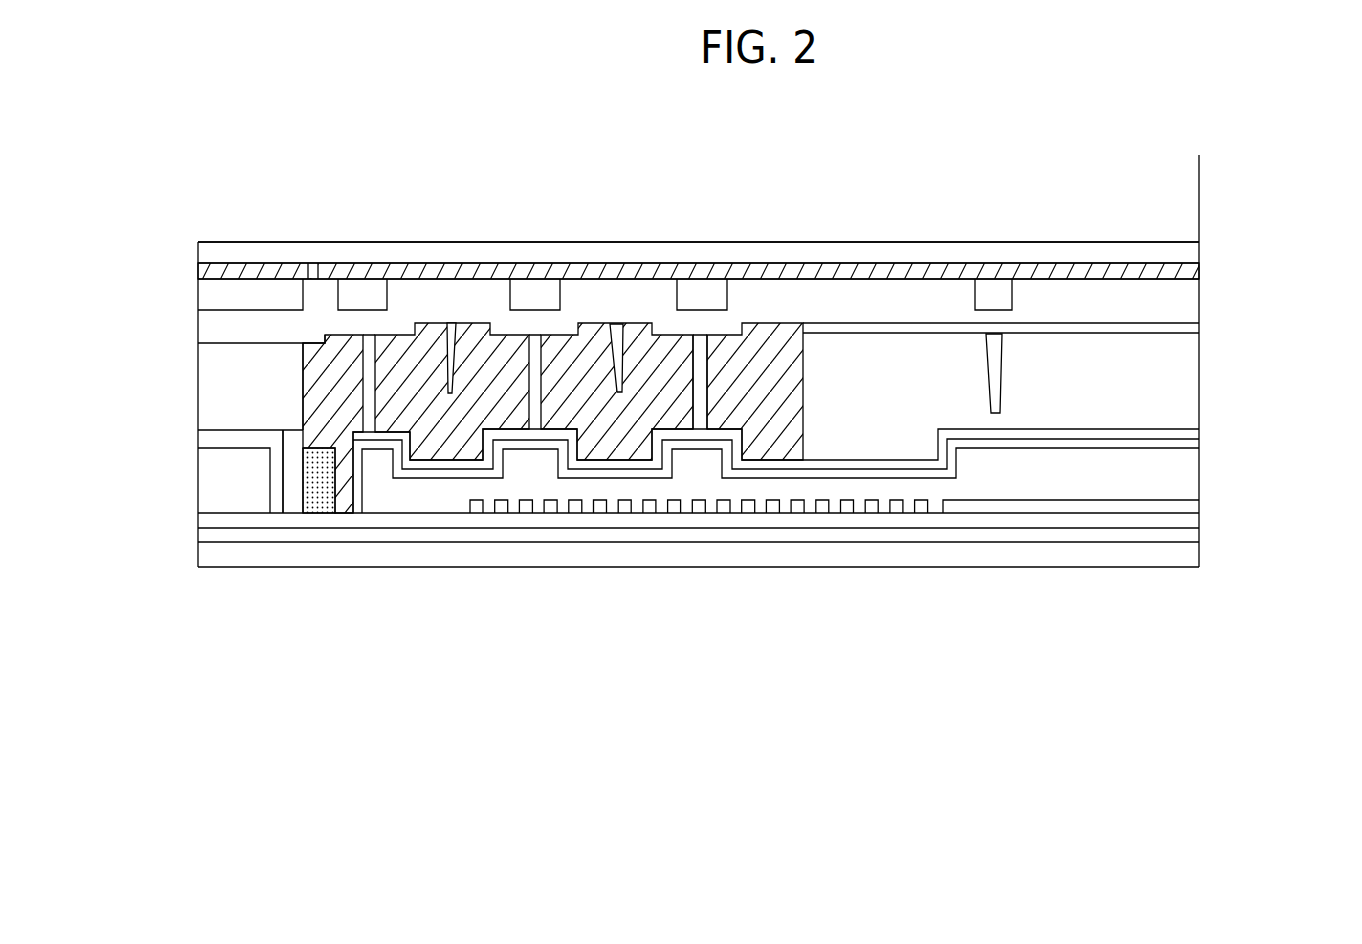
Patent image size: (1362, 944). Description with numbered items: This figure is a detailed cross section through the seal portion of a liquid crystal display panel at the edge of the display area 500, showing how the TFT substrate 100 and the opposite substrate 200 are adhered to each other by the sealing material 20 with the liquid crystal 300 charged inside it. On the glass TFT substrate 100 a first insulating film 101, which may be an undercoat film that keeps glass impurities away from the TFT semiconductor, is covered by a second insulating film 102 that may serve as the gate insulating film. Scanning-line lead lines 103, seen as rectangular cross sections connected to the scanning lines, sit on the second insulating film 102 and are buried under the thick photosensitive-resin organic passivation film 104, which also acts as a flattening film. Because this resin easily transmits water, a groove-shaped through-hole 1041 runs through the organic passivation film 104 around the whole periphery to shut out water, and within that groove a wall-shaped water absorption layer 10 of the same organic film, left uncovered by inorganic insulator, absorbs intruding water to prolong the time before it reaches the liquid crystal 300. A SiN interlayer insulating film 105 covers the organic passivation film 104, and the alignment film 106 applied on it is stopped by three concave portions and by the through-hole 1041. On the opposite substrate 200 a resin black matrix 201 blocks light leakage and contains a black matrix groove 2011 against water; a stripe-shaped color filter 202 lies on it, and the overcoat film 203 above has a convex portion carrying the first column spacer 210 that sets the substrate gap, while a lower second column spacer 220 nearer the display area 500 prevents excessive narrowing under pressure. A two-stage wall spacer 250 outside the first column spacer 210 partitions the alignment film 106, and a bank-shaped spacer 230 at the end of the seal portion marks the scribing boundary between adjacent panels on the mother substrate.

The display area 500 is at (1199, 172).
The opposite substrate 200 is at (1187, 253).
The black matrix 201 is at (1092, 263).
The black matrix groove 2011 is at (317, 264).
The color filter 202 is at (262, 292).
The overcoat film 203 is at (1133, 307).
The alignment film 106 is at (1167, 332).
The liquid crystal 300 is at (1168, 380).
The interlayer insulating film 105 is at (1185, 441).
The organic passivation film 104 is at (1173, 478).
The bank-shaped spacer 230 is at (228, 400).
The sealing material 20 is at (563, 410).
The wall spacer 250 is at (613, 363).
The first column spacer 210 is at (710, 400).
The second column spacer 220 is at (992, 370).
The water absorption layer 10 is at (320, 490).
The groove-shaped through-hole 1041 is at (292, 478).
The scanning-line lead line 103 is at (867, 514).
The second insulating film 102 is at (1187, 518).
The first insulating film 101 is at (1187, 535).
The TFT substrate 100 is at (1142, 553).